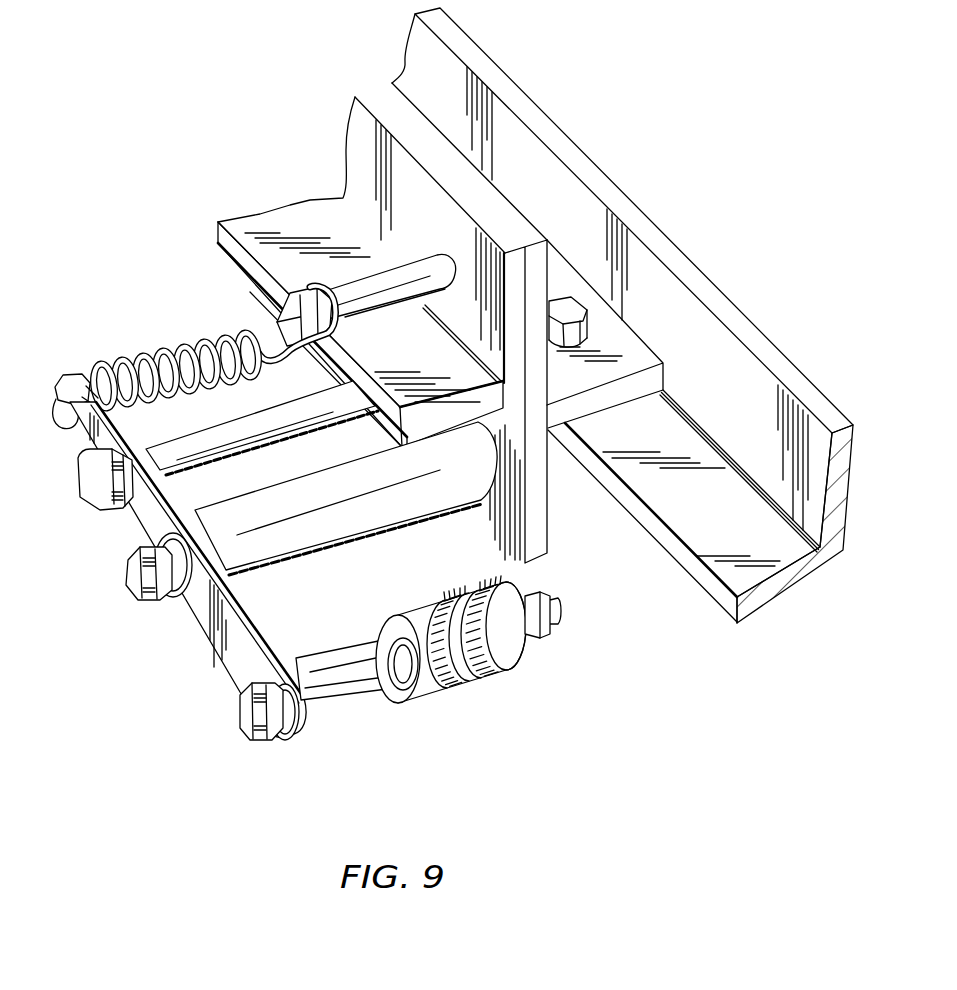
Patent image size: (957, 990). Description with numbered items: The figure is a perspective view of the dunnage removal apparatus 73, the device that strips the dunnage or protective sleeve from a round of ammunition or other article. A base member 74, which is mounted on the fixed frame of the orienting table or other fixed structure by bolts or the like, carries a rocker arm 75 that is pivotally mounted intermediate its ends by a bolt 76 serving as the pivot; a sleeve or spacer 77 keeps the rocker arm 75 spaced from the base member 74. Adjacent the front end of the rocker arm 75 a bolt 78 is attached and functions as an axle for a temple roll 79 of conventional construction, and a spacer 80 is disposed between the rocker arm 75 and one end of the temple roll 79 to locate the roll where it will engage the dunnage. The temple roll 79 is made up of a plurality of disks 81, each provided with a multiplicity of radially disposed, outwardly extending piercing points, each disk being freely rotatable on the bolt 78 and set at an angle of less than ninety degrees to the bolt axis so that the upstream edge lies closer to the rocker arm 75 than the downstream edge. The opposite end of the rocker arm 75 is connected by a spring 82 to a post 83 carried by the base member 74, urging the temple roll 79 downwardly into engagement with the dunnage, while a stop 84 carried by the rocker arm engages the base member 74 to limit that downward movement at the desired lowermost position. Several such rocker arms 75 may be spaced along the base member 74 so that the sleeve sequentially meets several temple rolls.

The dunnage removal apparatus 73 is at (252, 204).
The base member 74 is at (543, 505).
The rocker arm 75 is at (200, 625).
The bolt 76 is at (135, 569).
The sleeve or spacer 77 is at (327, 534).
The bolt 78 is at (247, 722).
The temple roll 79 is at (468, 619).
The spacer 80 is at (342, 693).
The disks 81 is at (493, 600).
The spring 82 is at (168, 342).
The post 83 is at (384, 298).
The stop 84 is at (88, 472).